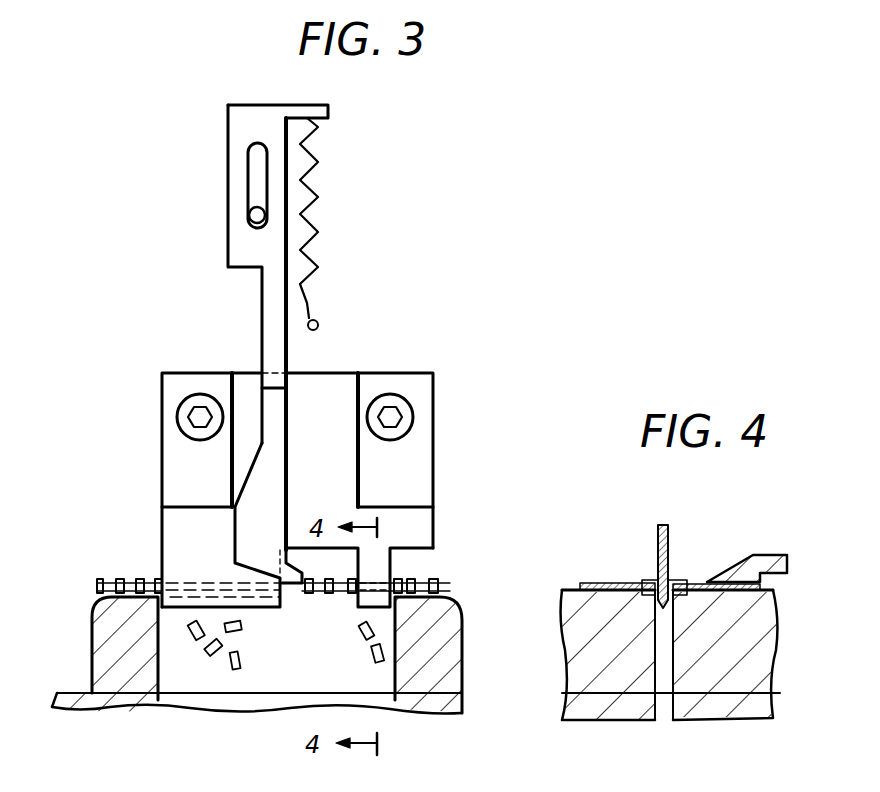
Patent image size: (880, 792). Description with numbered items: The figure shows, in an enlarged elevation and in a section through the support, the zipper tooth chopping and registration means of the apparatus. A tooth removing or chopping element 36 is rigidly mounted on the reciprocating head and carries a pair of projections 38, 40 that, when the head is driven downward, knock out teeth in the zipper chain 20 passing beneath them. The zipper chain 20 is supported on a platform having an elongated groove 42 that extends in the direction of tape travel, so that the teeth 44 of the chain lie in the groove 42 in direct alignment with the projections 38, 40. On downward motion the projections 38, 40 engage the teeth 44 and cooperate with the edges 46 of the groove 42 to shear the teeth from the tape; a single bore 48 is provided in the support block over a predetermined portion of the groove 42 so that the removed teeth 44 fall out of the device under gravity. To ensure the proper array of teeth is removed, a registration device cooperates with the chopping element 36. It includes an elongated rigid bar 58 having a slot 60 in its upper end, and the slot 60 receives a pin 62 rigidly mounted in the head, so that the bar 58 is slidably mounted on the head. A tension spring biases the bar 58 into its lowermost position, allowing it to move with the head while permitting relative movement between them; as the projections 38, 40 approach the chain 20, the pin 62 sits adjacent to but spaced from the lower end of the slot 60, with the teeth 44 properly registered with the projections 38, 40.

In FIG. 3, the zipper chain 20 is at (98, 588).
In FIG. 4, the zipper chain 20 is at (592, 584).
In FIG. 3, the chopping element 36 is at (163, 452).
In FIG. 3, the projection 38 is at (175, 559).
In FIG. 3, the projection 40 is at (387, 565).
In FIG. 4, the projection 40 is at (583, 650).
In FIG. 4, the groove 42 is at (707, 580).
In FIG. 4, the teeth 44 is at (680, 582).
In FIG. 4, the edges 46 is at (675, 600).
In FIG. 3, the bore 48 is at (168, 663).
In FIG. 3, the rigid bar 58 is at (278, 352).
In FIG. 3, the slot 60 is at (248, 167).
In FIG. 3, the pin 62 is at (257, 215).